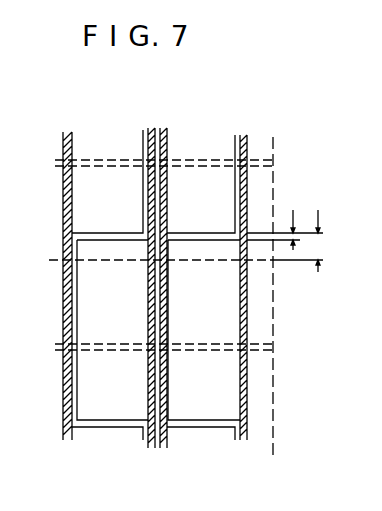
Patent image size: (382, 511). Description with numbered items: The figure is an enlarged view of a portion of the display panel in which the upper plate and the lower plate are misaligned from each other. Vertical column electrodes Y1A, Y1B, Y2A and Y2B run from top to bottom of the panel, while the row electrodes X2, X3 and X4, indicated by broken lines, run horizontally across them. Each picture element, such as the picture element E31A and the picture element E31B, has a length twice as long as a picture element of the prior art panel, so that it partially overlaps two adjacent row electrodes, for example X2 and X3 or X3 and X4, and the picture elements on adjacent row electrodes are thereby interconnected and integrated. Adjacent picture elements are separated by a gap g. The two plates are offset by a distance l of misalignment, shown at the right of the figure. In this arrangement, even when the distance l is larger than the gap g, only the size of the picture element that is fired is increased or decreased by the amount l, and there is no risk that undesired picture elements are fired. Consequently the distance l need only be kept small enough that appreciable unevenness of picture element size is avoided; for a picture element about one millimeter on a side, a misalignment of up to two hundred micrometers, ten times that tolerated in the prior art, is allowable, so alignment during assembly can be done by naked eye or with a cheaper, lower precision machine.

The column electrode Y1A is at (63, 150).
The column electrode Y2A is at (167, 145).
The column electrode Y1B is at (153, 446).
The column electrode Y2B is at (248, 440).
The row electrode X2 is at (273, 142).
The row electrode X3 is at (273, 190).
The row electrode X4 is at (273, 381).
The picture element E31A is at (80, 200).
The picture element E31B is at (85, 333).
The gap g is at (298, 238).
The distance of misalignment l is at (319, 241).